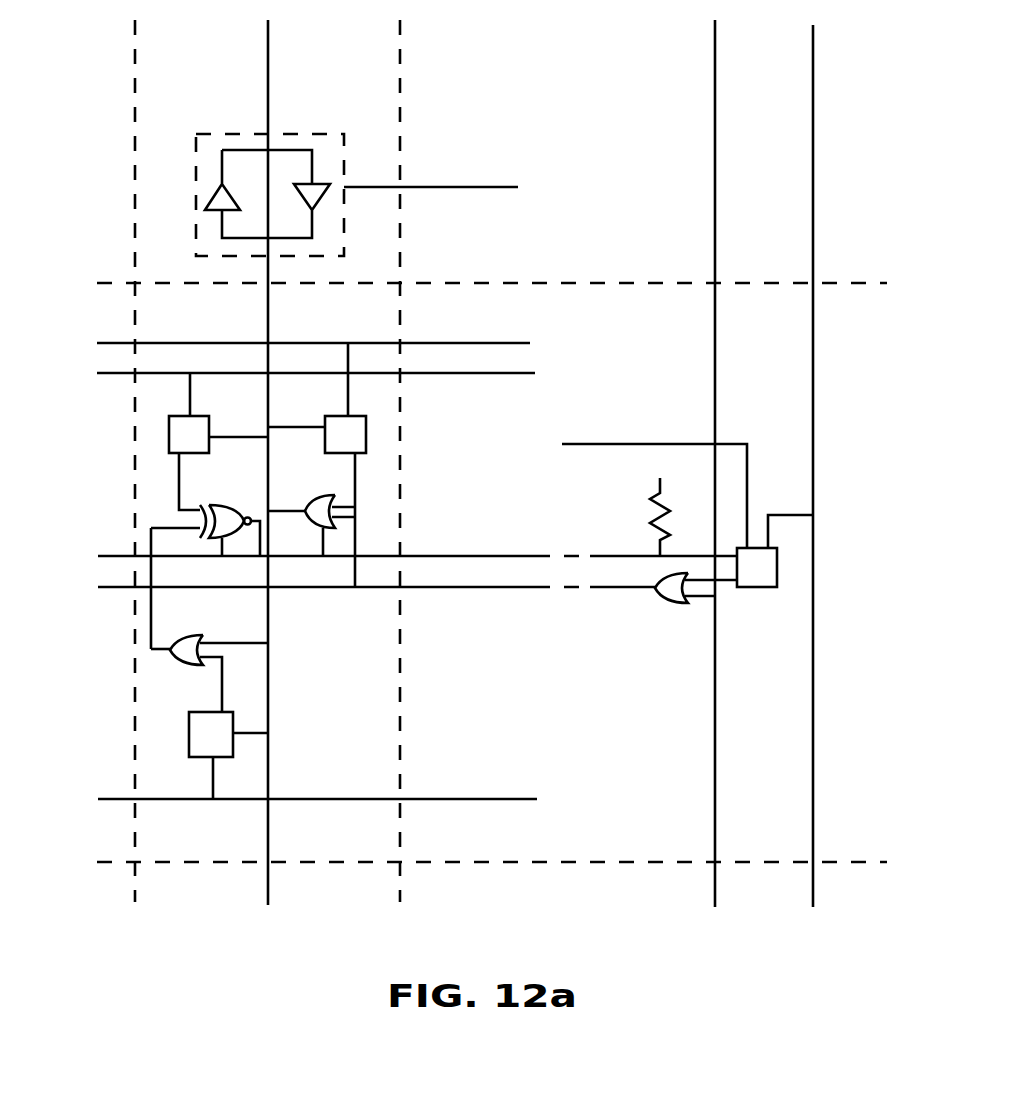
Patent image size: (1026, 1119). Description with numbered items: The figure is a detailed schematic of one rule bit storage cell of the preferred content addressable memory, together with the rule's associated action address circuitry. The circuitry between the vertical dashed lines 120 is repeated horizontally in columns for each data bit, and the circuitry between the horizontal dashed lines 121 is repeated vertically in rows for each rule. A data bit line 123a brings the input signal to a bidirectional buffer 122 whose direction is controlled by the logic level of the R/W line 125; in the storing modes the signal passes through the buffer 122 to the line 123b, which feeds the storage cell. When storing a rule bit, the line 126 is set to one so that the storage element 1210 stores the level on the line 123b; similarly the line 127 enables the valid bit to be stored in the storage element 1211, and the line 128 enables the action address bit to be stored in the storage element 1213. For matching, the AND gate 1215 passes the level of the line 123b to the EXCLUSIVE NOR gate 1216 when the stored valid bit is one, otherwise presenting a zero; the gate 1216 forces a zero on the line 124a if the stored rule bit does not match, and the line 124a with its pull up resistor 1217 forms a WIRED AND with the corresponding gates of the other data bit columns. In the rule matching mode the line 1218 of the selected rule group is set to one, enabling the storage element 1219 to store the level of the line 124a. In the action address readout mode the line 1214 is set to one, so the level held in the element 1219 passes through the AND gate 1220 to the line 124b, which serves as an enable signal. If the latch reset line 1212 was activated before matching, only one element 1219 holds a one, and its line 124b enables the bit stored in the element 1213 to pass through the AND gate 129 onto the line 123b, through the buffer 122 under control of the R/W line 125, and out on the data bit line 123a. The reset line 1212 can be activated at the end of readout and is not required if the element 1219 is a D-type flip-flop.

The vertical dashed lines 120 is at (135, 88).
The horizontal dashed lines 121 is at (578, 283).
The bidirectional buffer 122 is at (300, 134).
The data bit line 123a is at (268, 85).
The line 123b is at (268, 328).
The line 124a is at (430, 556).
The line 124b is at (430, 588).
The R/W line 125 is at (518, 188).
The line 126 is at (510, 375).
The line 127 is at (323, 798).
The line 128 is at (502, 343).
The AND gate 129 is at (323, 560).
The storage element 1210 is at (169, 443).
The storage element 1211 is at (189, 730).
The latch reset line 1212 is at (813, 175).
The storage element 1213 is at (366, 437).
The line 1214 is at (715, 78).
The AND gate 1215 is at (183, 663).
The EXCLUSIVE NOR gate 1216 is at (222, 559).
The pull up resistor 1217 is at (653, 520).
The line 1218 is at (625, 443).
The storage element 1219 is at (777, 565).
The AND gate 1220 is at (670, 603).